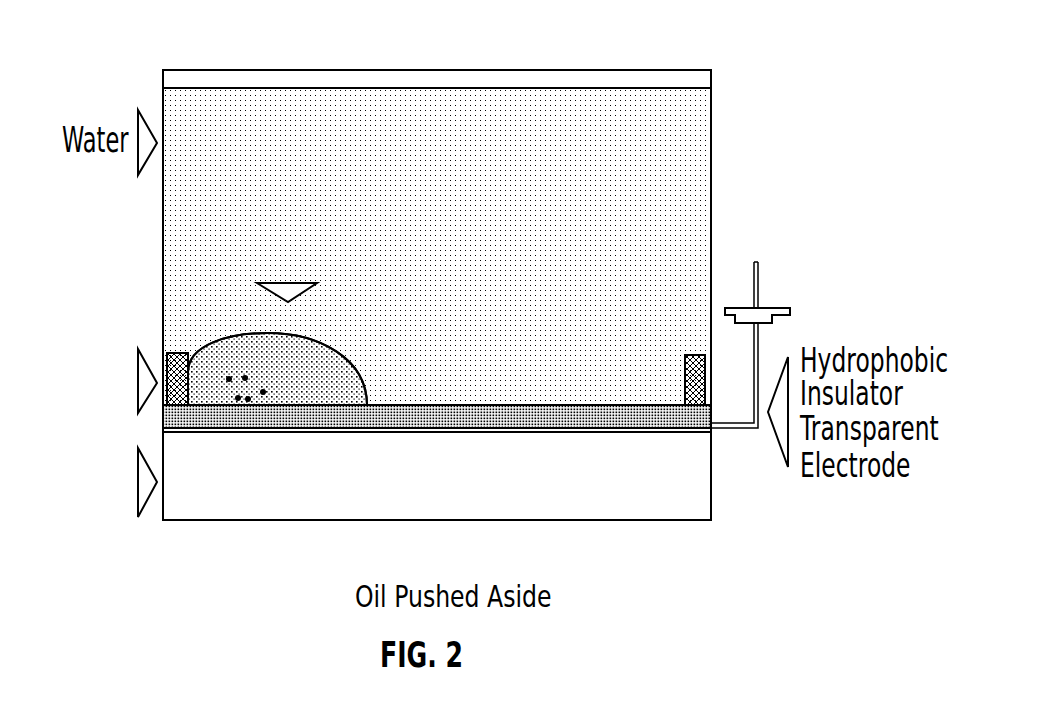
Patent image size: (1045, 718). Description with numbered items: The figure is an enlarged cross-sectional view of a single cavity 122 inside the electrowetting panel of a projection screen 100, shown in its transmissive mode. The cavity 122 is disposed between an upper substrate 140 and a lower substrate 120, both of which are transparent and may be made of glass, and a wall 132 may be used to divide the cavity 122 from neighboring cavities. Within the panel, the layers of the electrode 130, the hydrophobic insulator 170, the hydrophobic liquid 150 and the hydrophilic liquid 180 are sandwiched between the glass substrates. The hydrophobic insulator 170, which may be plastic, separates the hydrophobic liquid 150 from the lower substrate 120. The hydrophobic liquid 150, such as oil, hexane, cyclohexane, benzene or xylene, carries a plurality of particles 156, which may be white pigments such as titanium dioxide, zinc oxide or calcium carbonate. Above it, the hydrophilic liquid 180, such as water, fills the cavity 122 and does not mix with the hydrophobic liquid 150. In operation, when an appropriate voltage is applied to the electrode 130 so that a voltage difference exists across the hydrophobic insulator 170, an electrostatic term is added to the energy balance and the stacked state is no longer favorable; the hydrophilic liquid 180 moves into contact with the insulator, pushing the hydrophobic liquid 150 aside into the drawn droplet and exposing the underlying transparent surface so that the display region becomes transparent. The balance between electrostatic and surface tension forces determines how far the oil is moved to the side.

The projection screen 100 is at (115, 52).
The lower substrate 120 is at (528, 500).
The cavity 122 is at (592, 380).
The electrode 130 is at (653, 433).
The wall 132 is at (707, 392).
The upper substrate 140 is at (629, 78).
The hydrophobic liquid 150 is at (218, 377).
The particles 156 is at (238, 400).
The hydrophobic insulator 170 is at (357, 418).
The hydrophilic liquid 180 is at (308, 100).